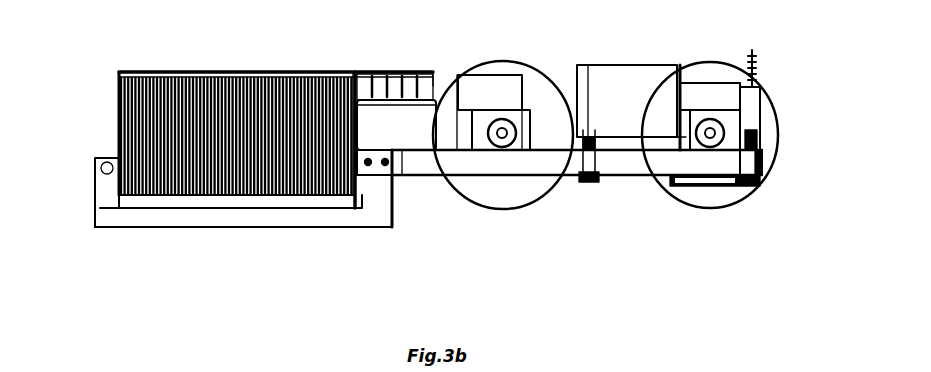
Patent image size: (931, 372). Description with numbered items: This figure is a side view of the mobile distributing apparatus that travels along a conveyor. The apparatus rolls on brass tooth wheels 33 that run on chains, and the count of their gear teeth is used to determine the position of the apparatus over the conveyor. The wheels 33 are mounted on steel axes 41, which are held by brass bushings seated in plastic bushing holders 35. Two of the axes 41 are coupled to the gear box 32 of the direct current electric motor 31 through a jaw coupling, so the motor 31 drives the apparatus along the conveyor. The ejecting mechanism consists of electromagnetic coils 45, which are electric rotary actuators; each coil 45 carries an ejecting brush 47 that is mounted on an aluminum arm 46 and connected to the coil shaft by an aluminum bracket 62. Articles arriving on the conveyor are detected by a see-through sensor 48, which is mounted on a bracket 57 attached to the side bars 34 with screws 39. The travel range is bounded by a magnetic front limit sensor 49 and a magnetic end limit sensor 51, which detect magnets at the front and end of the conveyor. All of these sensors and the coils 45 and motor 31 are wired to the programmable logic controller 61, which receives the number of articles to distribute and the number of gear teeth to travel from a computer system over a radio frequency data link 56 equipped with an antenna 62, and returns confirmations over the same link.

The direct current electric motor 31 is at (615, 88).
The gear box 32 is at (720, 105).
The brass tooth wheel 33 is at (720, 190).
The side bar 34 is at (400, 173).
The plastic bushing holder 35 is at (537, 156).
The screw 39 is at (354, 200).
The steel axis 41 is at (503, 143).
The electromagnetic coil 45 is at (395, 130).
The aluminum arm 46 is at (121, 73).
The ejecting brush 47 is at (153, 193).
The see-through sensor 48 is at (103, 158).
The front limit sensor 49 is at (592, 184).
The end limit sensor 51 is at (766, 133).
The radio frequency data link 56 is at (754, 112).
The bracket 57 is at (283, 228).
The programmable logic controller 61 is at (449, 133).
The aluminum bracket 62 is at (398, 71).